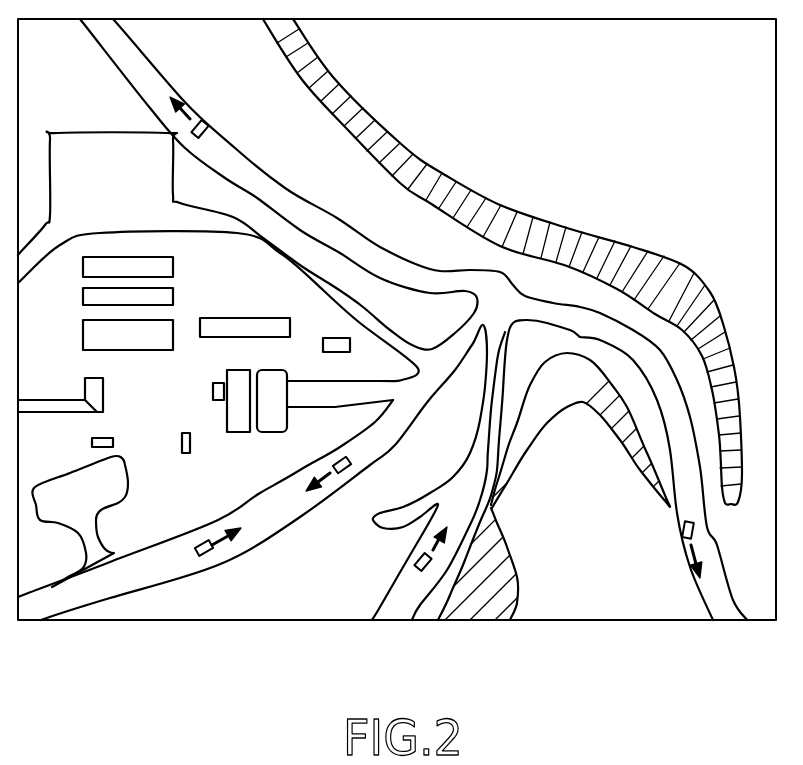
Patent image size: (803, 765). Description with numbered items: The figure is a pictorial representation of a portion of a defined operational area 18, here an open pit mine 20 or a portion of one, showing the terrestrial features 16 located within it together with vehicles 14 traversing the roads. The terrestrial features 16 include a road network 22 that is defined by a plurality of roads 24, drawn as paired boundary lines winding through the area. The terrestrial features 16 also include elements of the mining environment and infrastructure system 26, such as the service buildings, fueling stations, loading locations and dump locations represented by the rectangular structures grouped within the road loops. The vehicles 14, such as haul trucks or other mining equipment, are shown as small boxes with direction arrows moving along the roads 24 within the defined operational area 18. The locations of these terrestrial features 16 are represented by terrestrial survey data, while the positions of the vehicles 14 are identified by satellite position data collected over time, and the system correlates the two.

The vehicles 14 is at (208, 124).
The terrestrial features 16 is at (141, 431).
The defined operational area 18 is at (662, 129).
The open pit mine 20 is at (475, 140).
The road network 22 is at (456, 425).
The roads 24 is at (338, 219).
The mining environment and infrastructure system 26 is at (195, 395).